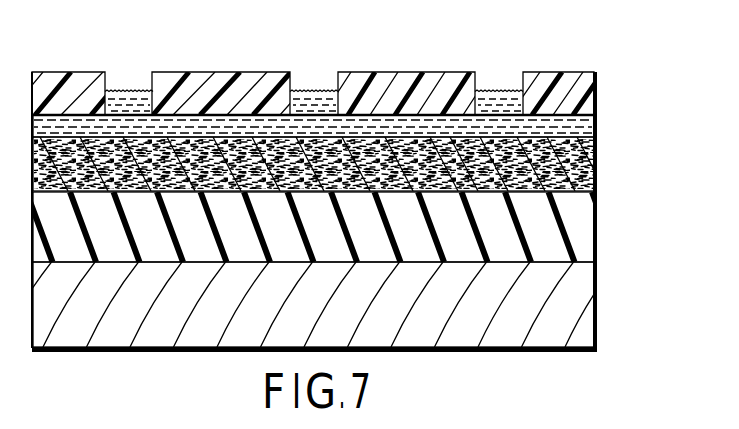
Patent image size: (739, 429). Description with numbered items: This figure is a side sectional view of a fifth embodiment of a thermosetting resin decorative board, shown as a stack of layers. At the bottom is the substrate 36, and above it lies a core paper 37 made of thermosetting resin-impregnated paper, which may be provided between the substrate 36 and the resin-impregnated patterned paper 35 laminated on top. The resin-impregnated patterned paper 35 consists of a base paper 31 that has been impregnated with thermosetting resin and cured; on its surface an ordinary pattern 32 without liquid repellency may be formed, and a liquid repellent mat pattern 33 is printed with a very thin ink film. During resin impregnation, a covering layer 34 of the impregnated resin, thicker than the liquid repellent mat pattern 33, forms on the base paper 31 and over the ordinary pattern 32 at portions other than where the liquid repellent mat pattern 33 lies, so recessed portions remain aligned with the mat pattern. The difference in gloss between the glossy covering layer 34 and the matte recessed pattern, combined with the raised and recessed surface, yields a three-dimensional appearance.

The base paper 31 is at (573, 163).
The ordinary pattern 32 is at (583, 127).
The liquid repellent mat pattern 33 is at (496, 90).
The covering layer of the impregnated resin 34 is at (583, 93).
The resin-impregnated patterned paper 35 is at (650, 54).
The substrate 36 is at (583, 300).
The core paper 37 is at (583, 223).